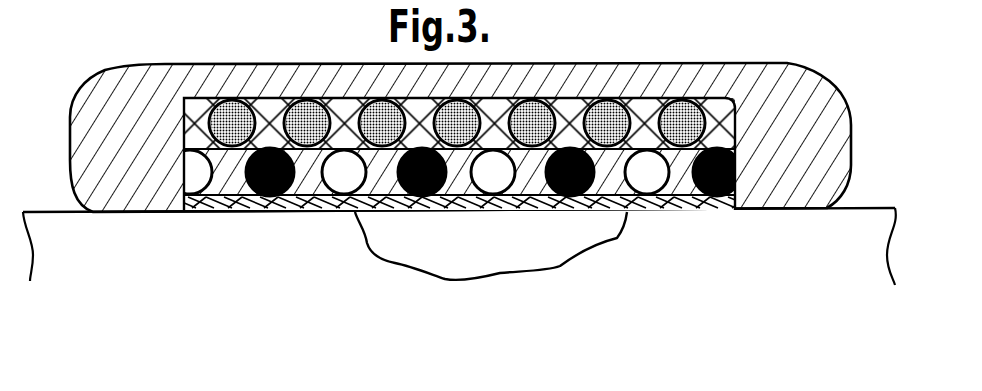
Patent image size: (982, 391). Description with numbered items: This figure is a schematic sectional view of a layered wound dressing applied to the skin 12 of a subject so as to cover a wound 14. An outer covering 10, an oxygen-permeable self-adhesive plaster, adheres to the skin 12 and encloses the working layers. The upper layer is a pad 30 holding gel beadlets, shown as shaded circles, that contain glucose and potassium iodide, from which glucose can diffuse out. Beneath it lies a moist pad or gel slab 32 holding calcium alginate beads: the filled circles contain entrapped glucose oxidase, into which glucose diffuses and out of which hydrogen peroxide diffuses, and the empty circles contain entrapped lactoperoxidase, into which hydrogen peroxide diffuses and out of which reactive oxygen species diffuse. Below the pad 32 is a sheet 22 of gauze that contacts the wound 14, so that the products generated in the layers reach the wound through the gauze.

The covering 10 is at (797, 124).
The skin 12 is at (810, 263).
The wound 14 is at (537, 235).
The sheet of gauze 22 is at (672, 209).
The pad with gel beads containing glucose and potassium iodide 30 is at (500, 130).
The moist pad with calcium alginate beads 32 is at (681, 128).